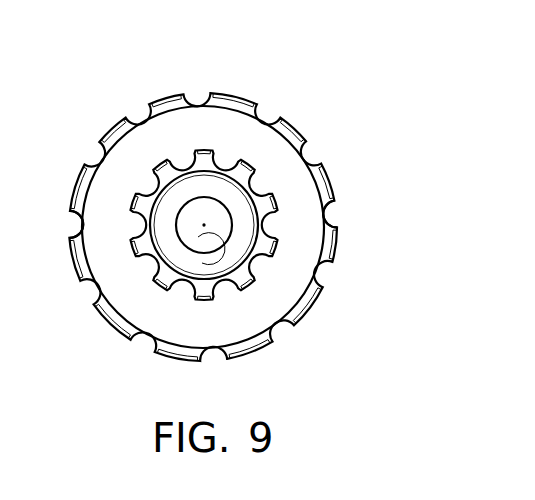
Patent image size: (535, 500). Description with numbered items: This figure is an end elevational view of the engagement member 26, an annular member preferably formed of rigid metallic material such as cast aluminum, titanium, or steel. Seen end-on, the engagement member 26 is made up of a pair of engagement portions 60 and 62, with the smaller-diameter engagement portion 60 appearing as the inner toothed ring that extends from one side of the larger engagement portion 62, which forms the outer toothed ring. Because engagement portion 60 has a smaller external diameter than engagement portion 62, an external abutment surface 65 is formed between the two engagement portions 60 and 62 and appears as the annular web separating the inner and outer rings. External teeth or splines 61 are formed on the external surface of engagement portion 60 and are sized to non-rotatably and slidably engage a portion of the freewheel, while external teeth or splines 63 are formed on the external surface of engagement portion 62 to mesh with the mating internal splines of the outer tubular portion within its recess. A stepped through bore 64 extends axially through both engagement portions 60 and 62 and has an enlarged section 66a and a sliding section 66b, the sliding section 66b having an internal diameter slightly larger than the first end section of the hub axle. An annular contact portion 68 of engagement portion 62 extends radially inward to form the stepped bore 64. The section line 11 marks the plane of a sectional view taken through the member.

The section line 11- 11 is at (247, 53).
The engagement member 26 is at (308, 84).
The engagement portion 60 is at (265, 178).
The external teeth or splines 61 is at (213, 267).
The engagement portion 62 is at (336, 222).
The external teeth or splines 63 is at (90, 215).
The stepped through bore 64 is at (207, 217).
The external abutment surface 65 is at (138, 298).
The enlarged section 66a is at (168, 191).
The sliding section 66b is at (200, 260).
The annular contact portion 68 is at (222, 192).